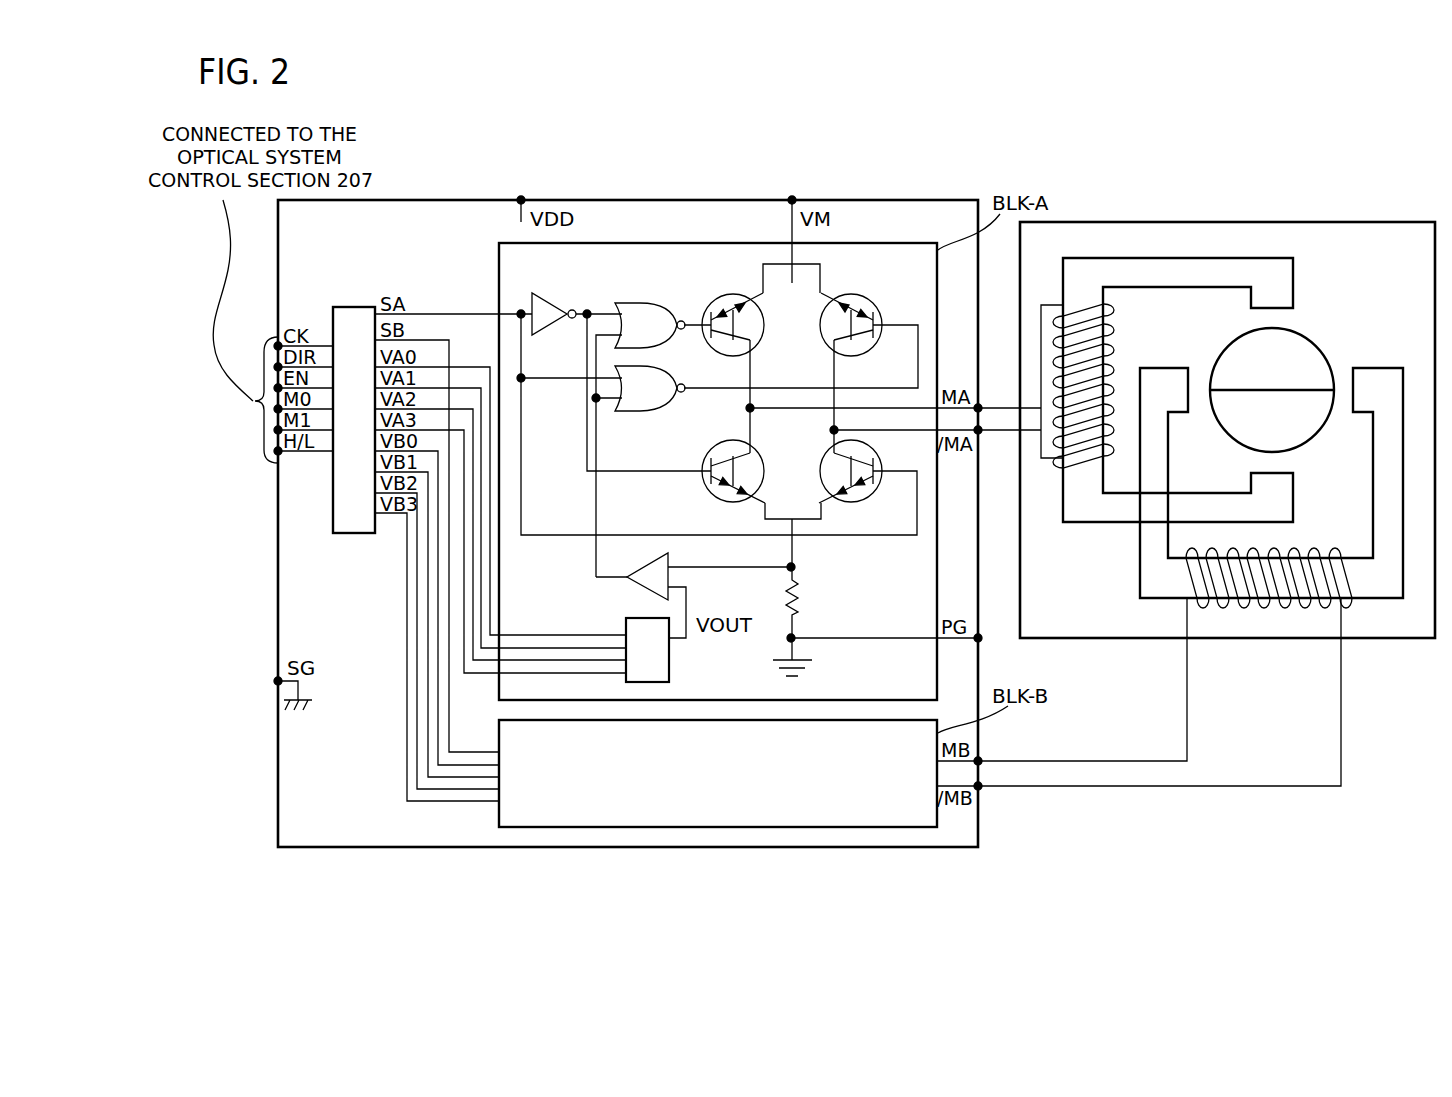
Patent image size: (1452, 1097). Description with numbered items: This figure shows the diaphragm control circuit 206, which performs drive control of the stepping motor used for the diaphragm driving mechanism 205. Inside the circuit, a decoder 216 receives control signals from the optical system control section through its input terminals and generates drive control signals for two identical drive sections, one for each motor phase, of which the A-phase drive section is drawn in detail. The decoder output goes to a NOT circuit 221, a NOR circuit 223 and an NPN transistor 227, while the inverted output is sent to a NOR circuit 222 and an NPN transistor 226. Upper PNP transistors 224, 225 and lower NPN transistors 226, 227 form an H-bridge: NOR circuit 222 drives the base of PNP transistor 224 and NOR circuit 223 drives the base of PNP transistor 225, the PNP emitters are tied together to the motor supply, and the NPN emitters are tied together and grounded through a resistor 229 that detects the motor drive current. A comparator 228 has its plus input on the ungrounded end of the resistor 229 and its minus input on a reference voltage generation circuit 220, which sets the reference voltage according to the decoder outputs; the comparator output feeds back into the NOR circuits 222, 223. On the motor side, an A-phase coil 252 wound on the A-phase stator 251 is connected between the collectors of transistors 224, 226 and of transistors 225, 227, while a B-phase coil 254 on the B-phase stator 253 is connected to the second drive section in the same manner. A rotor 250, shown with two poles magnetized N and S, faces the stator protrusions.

The diaphragm driving mechanism 205 is at (1192, 222).
The diaphragm control circuit 206 is at (649, 200).
The decoder 216 is at (353, 307).
The reference voltage generation circuit 220 is at (625, 618).
The NOT circuit 221 is at (552, 293).
The NOR circuit 222 is at (647, 298).
The NOR circuit 223 is at (647, 412).
The PNP transistor 224 is at (763, 343).
The PNP transistor 225 is at (862, 293).
The NPN transistor 226 is at (705, 485).
The NPN transistor 227 is at (822, 455).
The comparator 228 is at (650, 563).
The resistor 229 is at (797, 593).
The rotor 250 is at (1307, 332).
The A-phase stator 251 is at (1295, 265).
The A-phase coil 252 is at (1112, 330).
The B-phase stator 253 is at (1368, 367).
The B-phase coil 254 is at (1290, 552).